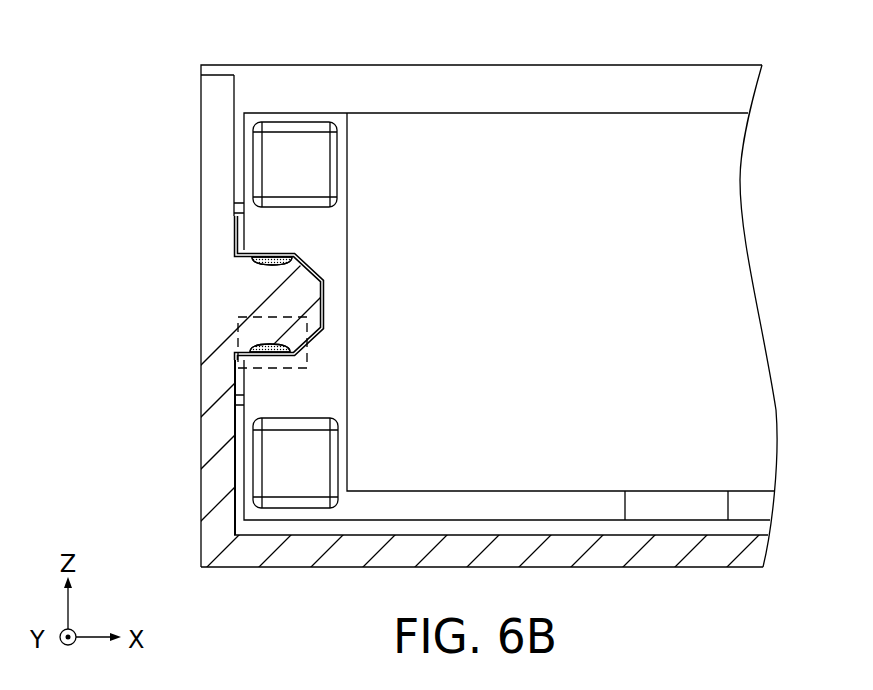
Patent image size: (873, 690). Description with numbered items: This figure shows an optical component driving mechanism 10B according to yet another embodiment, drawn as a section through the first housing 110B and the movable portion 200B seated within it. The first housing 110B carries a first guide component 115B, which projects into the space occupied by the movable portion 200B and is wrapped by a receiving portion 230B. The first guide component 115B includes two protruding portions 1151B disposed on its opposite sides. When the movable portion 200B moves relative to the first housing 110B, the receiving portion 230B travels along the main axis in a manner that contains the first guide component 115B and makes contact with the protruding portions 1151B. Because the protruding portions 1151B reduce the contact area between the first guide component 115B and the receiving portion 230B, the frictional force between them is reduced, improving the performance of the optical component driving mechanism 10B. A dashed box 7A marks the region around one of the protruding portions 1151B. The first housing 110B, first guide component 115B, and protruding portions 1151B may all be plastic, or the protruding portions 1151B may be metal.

The optical component driving mechanism 10B is at (112, 68).
The first housing 110B is at (682, 552).
The first guide component 115B is at (264, 297).
The protruding portions 1151B is at (272, 254).
The movable portion 200B is at (299, 118).
The receiving portion 230B is at (304, 262).
The enlarged region 7A is at (240, 322).